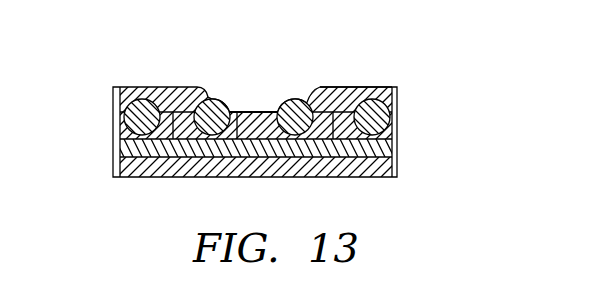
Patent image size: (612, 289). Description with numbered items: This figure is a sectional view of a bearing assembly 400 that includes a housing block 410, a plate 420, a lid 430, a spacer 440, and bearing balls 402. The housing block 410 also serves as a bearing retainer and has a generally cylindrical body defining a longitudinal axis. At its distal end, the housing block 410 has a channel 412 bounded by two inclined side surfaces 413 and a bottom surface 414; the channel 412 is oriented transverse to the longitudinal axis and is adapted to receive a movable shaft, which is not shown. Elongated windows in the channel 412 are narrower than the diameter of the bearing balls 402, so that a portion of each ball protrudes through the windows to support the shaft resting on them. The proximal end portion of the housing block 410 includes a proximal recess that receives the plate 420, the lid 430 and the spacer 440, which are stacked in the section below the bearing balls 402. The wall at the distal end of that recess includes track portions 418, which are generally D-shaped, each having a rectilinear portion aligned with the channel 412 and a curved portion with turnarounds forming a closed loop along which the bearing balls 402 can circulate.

The bearing assembly 400 is at (413, 82).
The bearing balls 402 is at (386, 125).
The housing block 410 is at (113, 112).
The channel 412 is at (251, 90).
The inclined side surfaces 413 is at (200, 95).
The bottom surface 414 is at (259, 106).
The track portions 418 is at (394, 90).
The plate 420 is at (268, 149).
The lid 430 is at (121, 146).
The spacer 440 is at (140, 178).